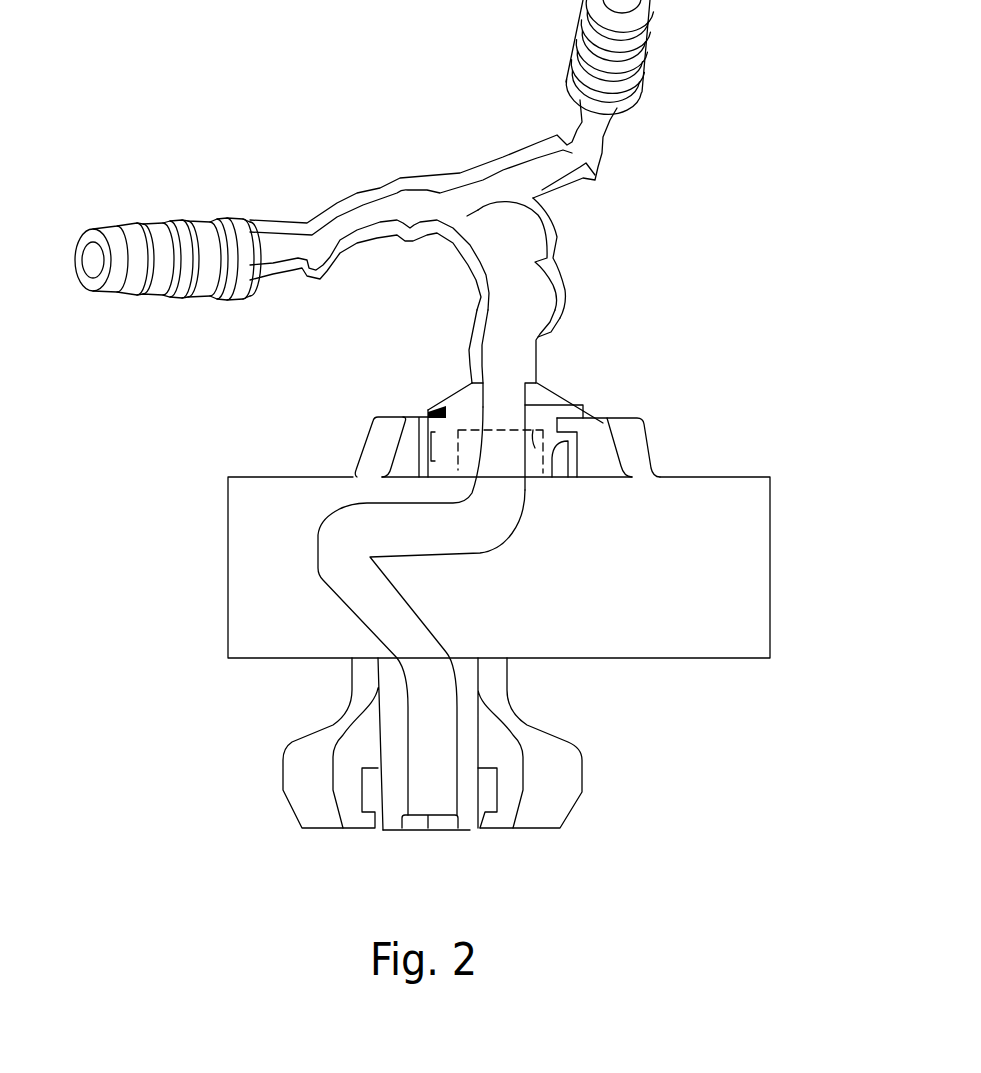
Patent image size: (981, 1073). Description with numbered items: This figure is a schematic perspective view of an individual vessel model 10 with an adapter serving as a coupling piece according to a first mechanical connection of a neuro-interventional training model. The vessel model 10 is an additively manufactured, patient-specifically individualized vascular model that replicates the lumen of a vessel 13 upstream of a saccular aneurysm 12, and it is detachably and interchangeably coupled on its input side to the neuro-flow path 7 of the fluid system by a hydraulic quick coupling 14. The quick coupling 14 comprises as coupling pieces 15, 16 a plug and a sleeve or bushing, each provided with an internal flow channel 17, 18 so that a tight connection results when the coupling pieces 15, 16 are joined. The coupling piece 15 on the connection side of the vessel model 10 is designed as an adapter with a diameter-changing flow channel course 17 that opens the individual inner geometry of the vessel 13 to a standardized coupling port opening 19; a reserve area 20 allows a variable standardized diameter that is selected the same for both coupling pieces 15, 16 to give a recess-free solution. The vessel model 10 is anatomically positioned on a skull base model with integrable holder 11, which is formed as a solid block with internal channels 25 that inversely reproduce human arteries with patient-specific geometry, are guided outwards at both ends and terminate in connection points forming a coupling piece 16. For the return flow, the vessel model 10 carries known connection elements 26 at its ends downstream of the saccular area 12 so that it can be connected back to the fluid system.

The neuro-flow path 7 is at (428, 818).
The vessel model 10 is at (332, 186).
The skull base model with integrable holder 11 is at (665, 628).
The saccular aneurysm 12 is at (523, 237).
The vessel 13 is at (527, 293).
The hydraulic quick coupling 14 is at (586, 428).
The coupling piece 15 is at (492, 412).
The coupling piece 16 is at (533, 462).
The internal flow channel 17 is at (485, 460).
The internal flow channel 18 is at (492, 455).
The coupling port opening 19 is at (548, 420).
The reserve area 20 is at (537, 446).
The internal channels 25 is at (350, 607).
The connection elements 26 is at (134, 222).